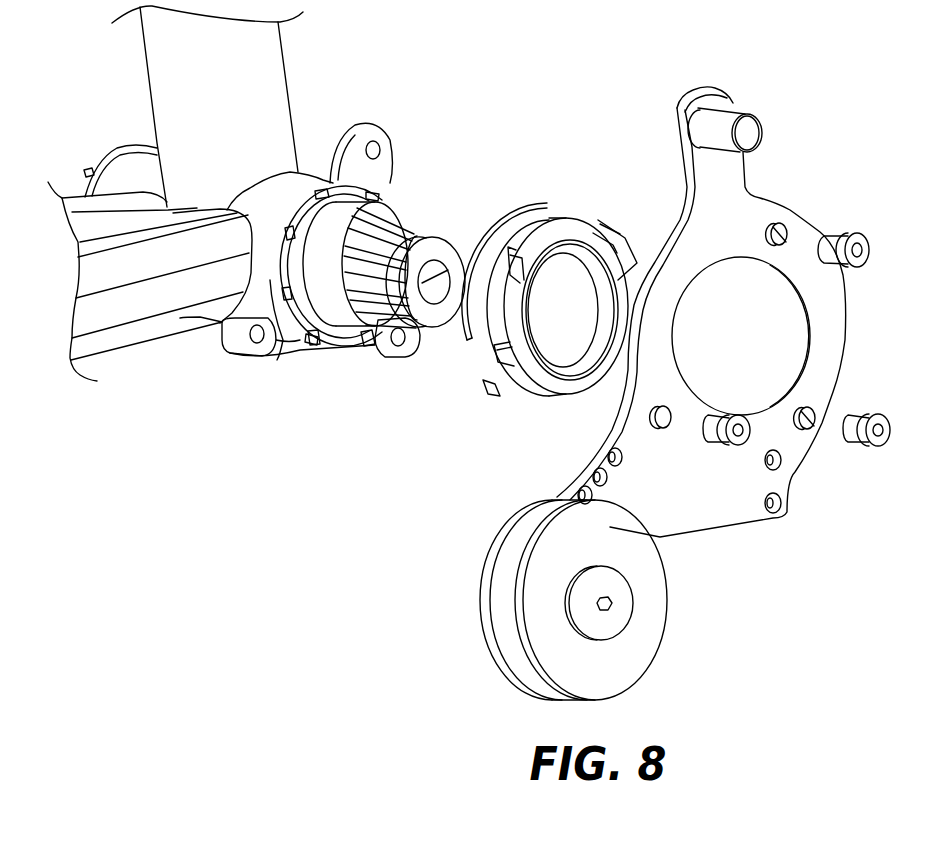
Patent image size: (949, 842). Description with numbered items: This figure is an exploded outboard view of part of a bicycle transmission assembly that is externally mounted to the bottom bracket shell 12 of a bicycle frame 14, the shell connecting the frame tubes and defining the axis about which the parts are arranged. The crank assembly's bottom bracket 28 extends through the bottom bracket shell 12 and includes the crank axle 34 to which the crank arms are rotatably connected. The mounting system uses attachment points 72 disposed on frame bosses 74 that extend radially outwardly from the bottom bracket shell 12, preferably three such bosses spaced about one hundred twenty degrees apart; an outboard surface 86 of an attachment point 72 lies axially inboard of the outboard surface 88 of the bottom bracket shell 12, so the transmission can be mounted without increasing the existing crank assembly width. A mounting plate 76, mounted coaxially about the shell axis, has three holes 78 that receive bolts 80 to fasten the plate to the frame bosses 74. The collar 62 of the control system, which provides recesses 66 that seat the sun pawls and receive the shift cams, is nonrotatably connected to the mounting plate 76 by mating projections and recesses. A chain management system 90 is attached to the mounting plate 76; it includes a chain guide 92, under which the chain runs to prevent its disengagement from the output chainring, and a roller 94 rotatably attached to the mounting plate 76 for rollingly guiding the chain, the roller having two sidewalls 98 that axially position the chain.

The bottom bracket shell 12 is at (297, 200).
The bicycle frame 14 is at (177, 79).
The bottom bracket 28 is at (413, 185).
The crank axle 34 is at (418, 240).
The collar 62 is at (535, 388).
The recesses 66 is at (481, 325).
The attachment points 72 is at (375, 148).
The frame bosses 74 is at (390, 180).
The mounting plate 76 is at (717, 507).
The holes 78 is at (788, 233).
The bolts 80 is at (750, 432).
The outboard surface of the attachment point 86 is at (282, 343).
The outboard surface of the bottom bracket shell 88 is at (313, 346).
The chain management system 90 is at (594, 601).
The chain guide 92 is at (752, 132).
The roller 94 is at (623, 665).
The sidewalls 98 is at (521, 600).